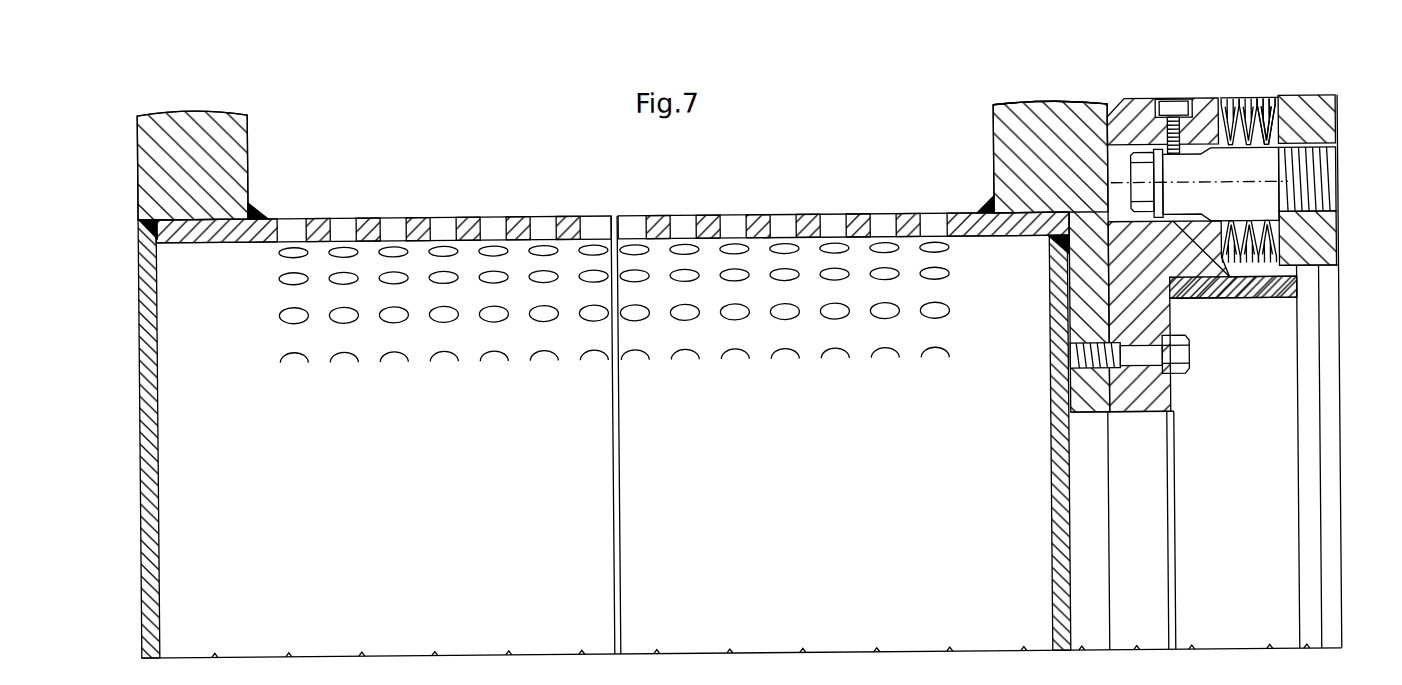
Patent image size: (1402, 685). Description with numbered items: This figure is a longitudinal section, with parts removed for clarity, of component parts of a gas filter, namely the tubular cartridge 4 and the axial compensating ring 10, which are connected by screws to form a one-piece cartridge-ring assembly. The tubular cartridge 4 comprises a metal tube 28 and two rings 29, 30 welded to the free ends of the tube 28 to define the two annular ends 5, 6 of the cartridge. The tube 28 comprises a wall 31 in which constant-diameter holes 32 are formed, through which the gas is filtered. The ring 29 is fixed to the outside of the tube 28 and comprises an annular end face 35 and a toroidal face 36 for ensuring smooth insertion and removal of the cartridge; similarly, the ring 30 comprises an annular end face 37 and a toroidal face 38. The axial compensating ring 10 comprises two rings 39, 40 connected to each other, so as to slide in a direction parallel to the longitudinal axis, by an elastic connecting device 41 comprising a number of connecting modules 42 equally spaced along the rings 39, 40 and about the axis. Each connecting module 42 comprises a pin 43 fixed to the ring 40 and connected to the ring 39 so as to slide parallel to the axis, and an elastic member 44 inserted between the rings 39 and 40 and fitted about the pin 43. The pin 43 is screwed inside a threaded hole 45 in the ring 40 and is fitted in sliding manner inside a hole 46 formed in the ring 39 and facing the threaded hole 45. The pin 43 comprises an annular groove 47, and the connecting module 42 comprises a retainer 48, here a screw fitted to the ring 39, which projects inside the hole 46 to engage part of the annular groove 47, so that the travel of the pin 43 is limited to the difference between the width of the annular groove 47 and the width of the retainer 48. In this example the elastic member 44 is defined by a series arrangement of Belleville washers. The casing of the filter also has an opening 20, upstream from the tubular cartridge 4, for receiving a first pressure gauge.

The tubular cartridge 4 is at (838, 167).
The annular end 5 is at (333, 197).
The annular end 6 is at (958, 84).
The axial compensating ring 10 is at (1282, 412).
The opening 20 is at (1266, 67).
The metal tube 28 is at (652, 212).
The ring 29 is at (217, 161).
The ring 30 is at (1013, 151).
The wall 31 is at (407, 214).
The constant-diameter holes 32 is at (449, 214).
The annular end face 35 is at (139, 156).
The toroidal face 36 is at (205, 108).
The annular end face 37 is at (1136, 104).
The toroidal face 38 is at (1043, 101).
The ring 39 is at (1185, 283).
The ring 40 is at (1315, 106).
The elastic connecting device 41 is at (1288, 68).
The connecting module 42 is at (1249, 92).
The pin 43 is at (1333, 241).
The elastic member 44 is at (1270, 275).
The threaded hole 45 is at (1333, 196).
The hole 46 is at (1120, 224).
The annular groove 47 is at (1188, 224).
The retainer 48 is at (1171, 122).